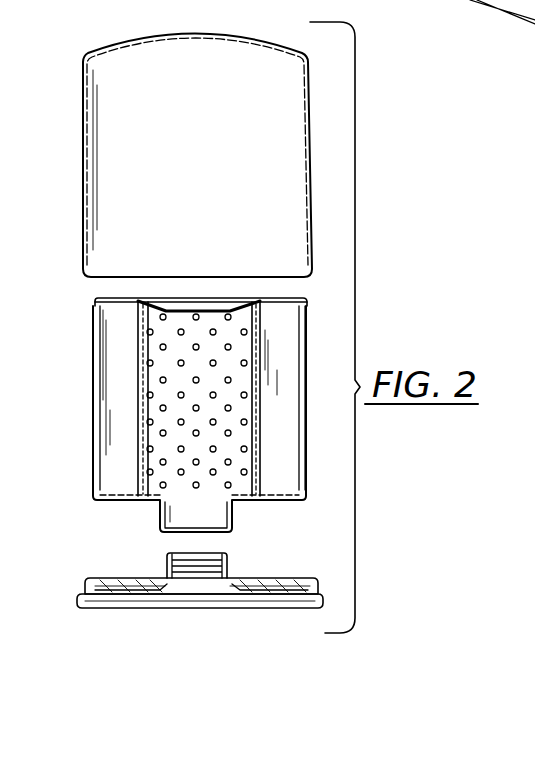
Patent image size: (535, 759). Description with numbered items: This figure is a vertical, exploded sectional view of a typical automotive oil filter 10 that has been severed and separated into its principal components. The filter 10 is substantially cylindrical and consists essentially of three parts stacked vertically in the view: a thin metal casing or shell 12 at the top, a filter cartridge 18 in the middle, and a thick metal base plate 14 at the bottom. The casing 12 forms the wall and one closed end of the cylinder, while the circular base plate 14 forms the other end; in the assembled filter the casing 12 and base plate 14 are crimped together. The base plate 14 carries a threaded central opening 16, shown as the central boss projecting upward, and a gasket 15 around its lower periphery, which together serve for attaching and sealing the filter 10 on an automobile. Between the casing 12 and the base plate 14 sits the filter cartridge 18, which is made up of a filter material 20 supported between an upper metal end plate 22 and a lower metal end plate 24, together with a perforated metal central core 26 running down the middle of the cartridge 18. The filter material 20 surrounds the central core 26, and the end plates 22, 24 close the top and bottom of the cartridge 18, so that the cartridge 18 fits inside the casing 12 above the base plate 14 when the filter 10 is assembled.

The automotive oil filter 10 is at (117, 33).
The casing 12 is at (83, 107).
The base plate 14 is at (138, 580).
The gasket 15 is at (86, 608).
The threaded central opening 16 is at (225, 555).
The filter cartridge 18 is at (306, 369).
The filter material 20 is at (97, 368).
The upper end plate 22 is at (93, 300).
The lower end plate 24 is at (93, 493).
The central core 26 is at (148, 428).